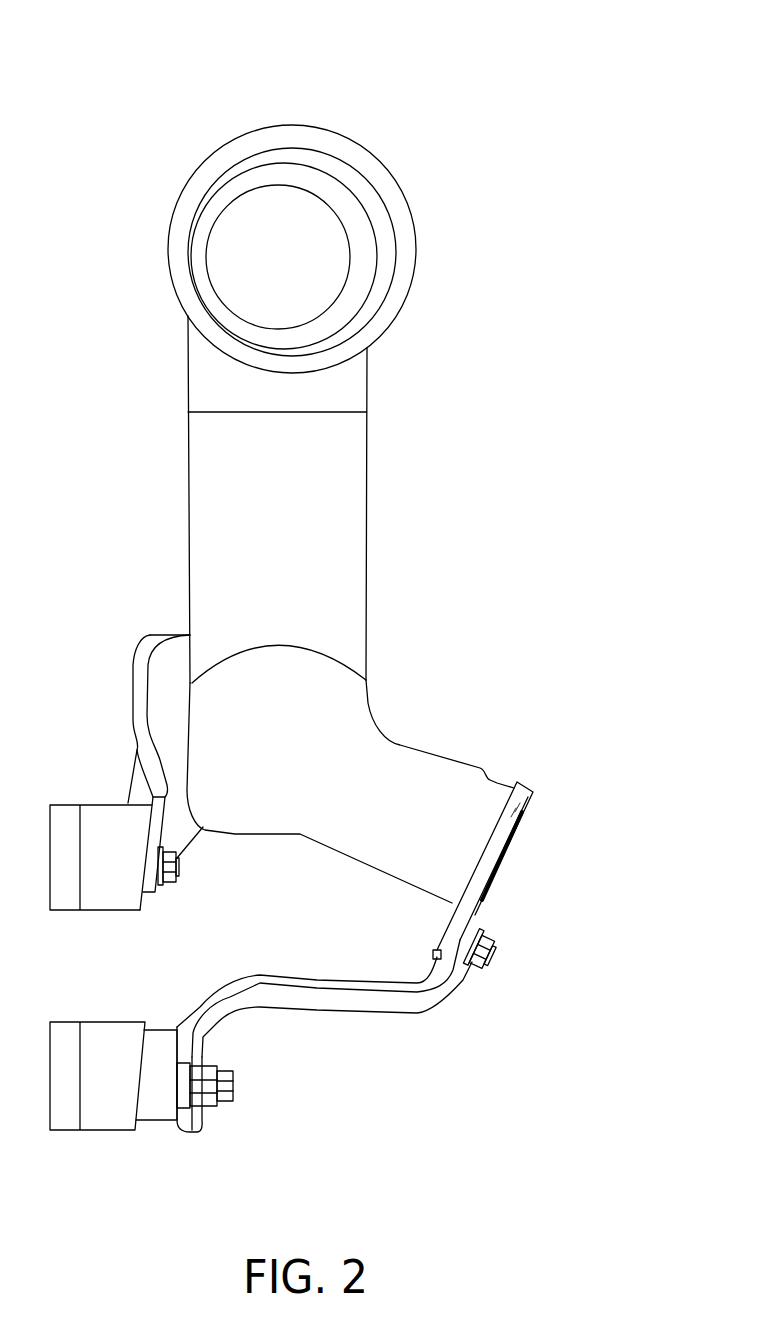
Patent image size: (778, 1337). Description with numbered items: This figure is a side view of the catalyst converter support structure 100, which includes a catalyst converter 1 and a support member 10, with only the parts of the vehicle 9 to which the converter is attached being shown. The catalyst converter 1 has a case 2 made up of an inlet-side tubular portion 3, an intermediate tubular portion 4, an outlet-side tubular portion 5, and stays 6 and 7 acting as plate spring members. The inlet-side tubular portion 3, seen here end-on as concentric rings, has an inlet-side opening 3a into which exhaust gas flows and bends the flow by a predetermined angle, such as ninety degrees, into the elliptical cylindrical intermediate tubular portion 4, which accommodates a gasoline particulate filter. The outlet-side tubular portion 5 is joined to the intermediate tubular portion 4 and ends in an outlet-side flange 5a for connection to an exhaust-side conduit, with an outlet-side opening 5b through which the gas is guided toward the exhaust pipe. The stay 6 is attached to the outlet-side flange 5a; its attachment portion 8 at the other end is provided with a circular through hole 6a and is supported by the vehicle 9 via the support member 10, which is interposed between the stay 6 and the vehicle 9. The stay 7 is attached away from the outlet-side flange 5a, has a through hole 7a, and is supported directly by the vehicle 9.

The support structure 100 is at (82, 94).
The catalyst converter 1 is at (160, 139).
The case 2 is at (454, 169).
The inlet-side tubular portion 3 is at (417, 258).
The inlet-side opening 3a is at (372, 295).
The intermediate tubular portion 4 is at (368, 523).
The outlet-side tubular portion 5 is at (397, 742).
The outlet-side flange 5a is at (528, 803).
The outlet-side opening 5b is at (507, 858).
The stay 6 is at (247, 1003).
The through hole 6a is at (178, 1133).
The stay 7 is at (176, 832).
The through hole 7a is at (157, 883).
The attachment portion 8 is at (197, 1133).
The vehicle 9 is at (110, 877).
The support member 10 is at (208, 1126).